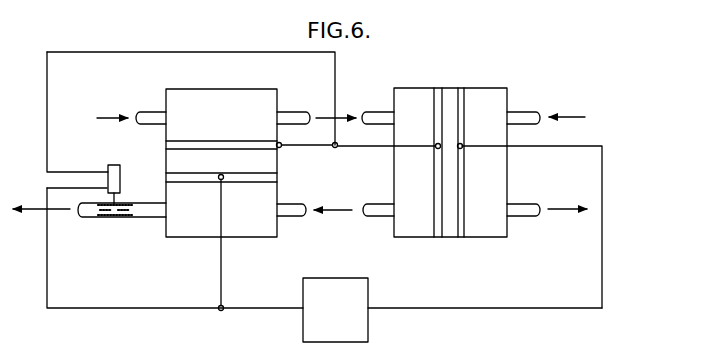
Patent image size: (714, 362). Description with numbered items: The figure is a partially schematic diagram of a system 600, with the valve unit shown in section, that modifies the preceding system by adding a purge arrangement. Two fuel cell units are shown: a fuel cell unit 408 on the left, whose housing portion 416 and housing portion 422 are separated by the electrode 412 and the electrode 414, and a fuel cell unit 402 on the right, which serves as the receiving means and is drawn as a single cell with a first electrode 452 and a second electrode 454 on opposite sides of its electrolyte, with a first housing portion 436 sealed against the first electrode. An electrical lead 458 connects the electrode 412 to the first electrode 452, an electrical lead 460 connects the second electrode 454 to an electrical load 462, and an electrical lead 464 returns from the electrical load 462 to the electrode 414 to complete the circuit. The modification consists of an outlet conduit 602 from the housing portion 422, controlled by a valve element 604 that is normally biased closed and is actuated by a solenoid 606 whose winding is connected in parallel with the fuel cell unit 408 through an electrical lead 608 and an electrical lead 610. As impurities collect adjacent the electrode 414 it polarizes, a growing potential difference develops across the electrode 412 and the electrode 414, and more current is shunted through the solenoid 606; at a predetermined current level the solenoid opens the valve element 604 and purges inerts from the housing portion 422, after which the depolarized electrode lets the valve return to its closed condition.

The system 600 is at (410, 72).
The fuel cell unit 402 is at (527, 72).
The fuel cell unit 408 is at (183, 87).
The electrode 412 is at (220, 143).
The electrode 414 is at (192, 179).
The housing portion 416 is at (263, 93).
The housing portion 422 is at (246, 237).
The first housing portion 436 is at (415, 228).
The first electrode 452 is at (438, 190).
The second electrode 454 is at (460, 167).
The electrical lead 458 is at (353, 149).
The electrical lead 460 is at (602, 223).
The electrical load 462 is at (368, 329).
The electrical lead 464 is at (218, 282).
The outlet conduit 602 is at (150, 220).
The valve element 604 is at (106, 220).
The solenoid 606 is at (121, 173).
The electrical lead 608 is at (128, 309).
The electrical lead 610 is at (129, 50).